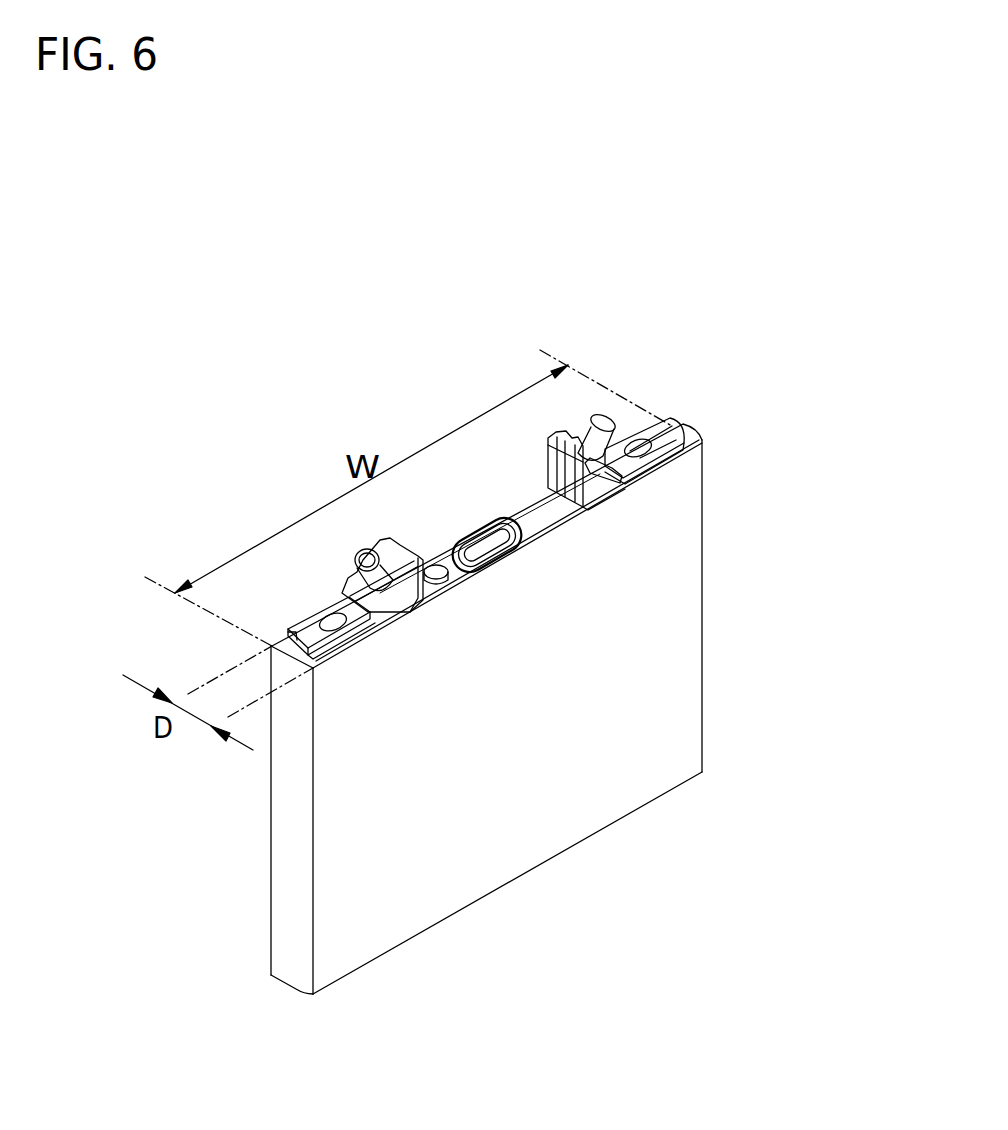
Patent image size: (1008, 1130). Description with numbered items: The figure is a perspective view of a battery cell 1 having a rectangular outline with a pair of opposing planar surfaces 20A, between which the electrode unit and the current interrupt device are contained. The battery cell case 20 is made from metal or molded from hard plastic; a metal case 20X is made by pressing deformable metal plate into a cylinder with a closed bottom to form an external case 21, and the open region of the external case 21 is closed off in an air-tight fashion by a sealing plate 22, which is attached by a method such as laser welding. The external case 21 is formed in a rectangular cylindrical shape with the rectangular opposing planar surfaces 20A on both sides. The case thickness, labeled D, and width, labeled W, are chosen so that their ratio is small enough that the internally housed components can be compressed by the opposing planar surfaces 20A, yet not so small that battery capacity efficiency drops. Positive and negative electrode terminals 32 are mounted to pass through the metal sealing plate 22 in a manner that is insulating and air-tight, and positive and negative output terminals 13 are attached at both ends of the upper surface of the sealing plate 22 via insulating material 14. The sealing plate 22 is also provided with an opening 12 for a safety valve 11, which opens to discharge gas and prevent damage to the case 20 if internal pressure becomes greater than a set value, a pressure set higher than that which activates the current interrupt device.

The battery cell 1 is at (686, 390).
The safety valve 11 is at (521, 548).
The opening 12 is at (480, 552).
The output terminal 13 is at (378, 573).
The insulating material 14 is at (413, 598).
The battery cell case 20 is at (575, 709).
The metal case 20X is at (790, 650).
The opposing planar surface 20A is at (507, 817).
The external case 21 is at (530, 740).
The sealing plate 22 is at (533, 520).
The electrode terminal 32 is at (335, 622).